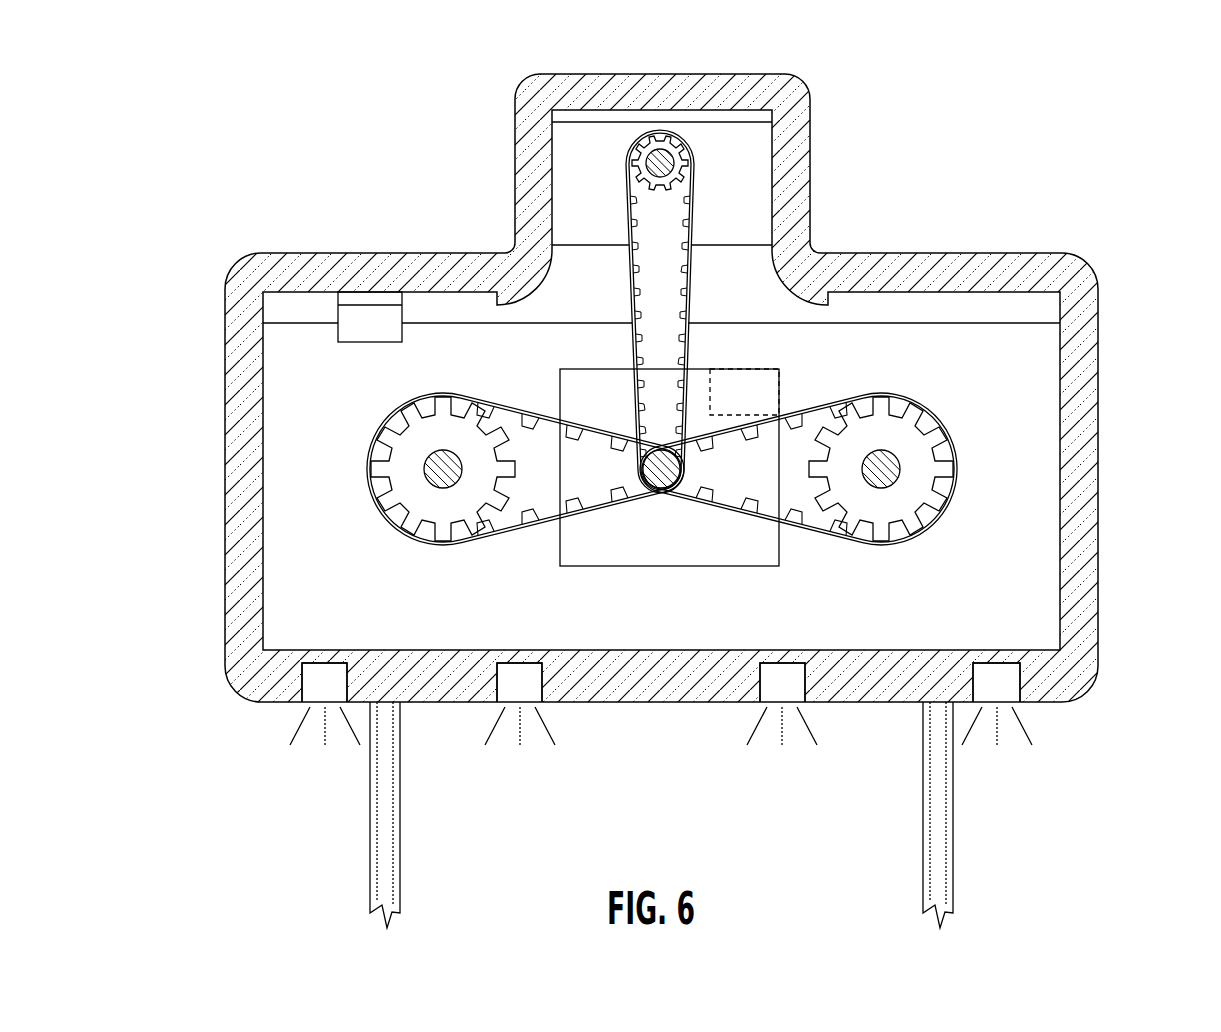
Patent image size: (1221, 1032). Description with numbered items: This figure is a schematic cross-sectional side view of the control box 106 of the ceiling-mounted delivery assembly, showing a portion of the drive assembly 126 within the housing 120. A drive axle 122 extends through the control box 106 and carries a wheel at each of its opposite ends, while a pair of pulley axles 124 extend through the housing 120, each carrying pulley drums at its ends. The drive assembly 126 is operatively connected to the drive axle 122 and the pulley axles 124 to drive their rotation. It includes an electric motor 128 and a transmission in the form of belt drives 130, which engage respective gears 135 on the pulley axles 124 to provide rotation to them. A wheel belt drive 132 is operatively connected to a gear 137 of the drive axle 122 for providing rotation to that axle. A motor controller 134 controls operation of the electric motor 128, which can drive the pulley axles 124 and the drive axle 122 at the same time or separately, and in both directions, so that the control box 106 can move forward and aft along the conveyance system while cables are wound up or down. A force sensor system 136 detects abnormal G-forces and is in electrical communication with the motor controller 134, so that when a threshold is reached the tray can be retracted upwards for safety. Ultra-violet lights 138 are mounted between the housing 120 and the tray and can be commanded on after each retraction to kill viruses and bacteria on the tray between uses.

The control box 106 is at (1125, 420).
The housing 120 is at (1100, 307).
The drive axle 122 is at (693, 158).
The pulley axle 124 is at (435, 487).
The drive assembly 126 is at (943, 362).
The electric motor 128 is at (655, 566).
The belt drive 130 is at (493, 523).
The wheel belt drive 132 is at (697, 223).
The motor controller 134 is at (757, 369).
The gear 135 is at (412, 475).
The force sensor system 136 is at (373, 315).
The gear 137 is at (650, 135).
The ultra-violet light 138 is at (772, 697).